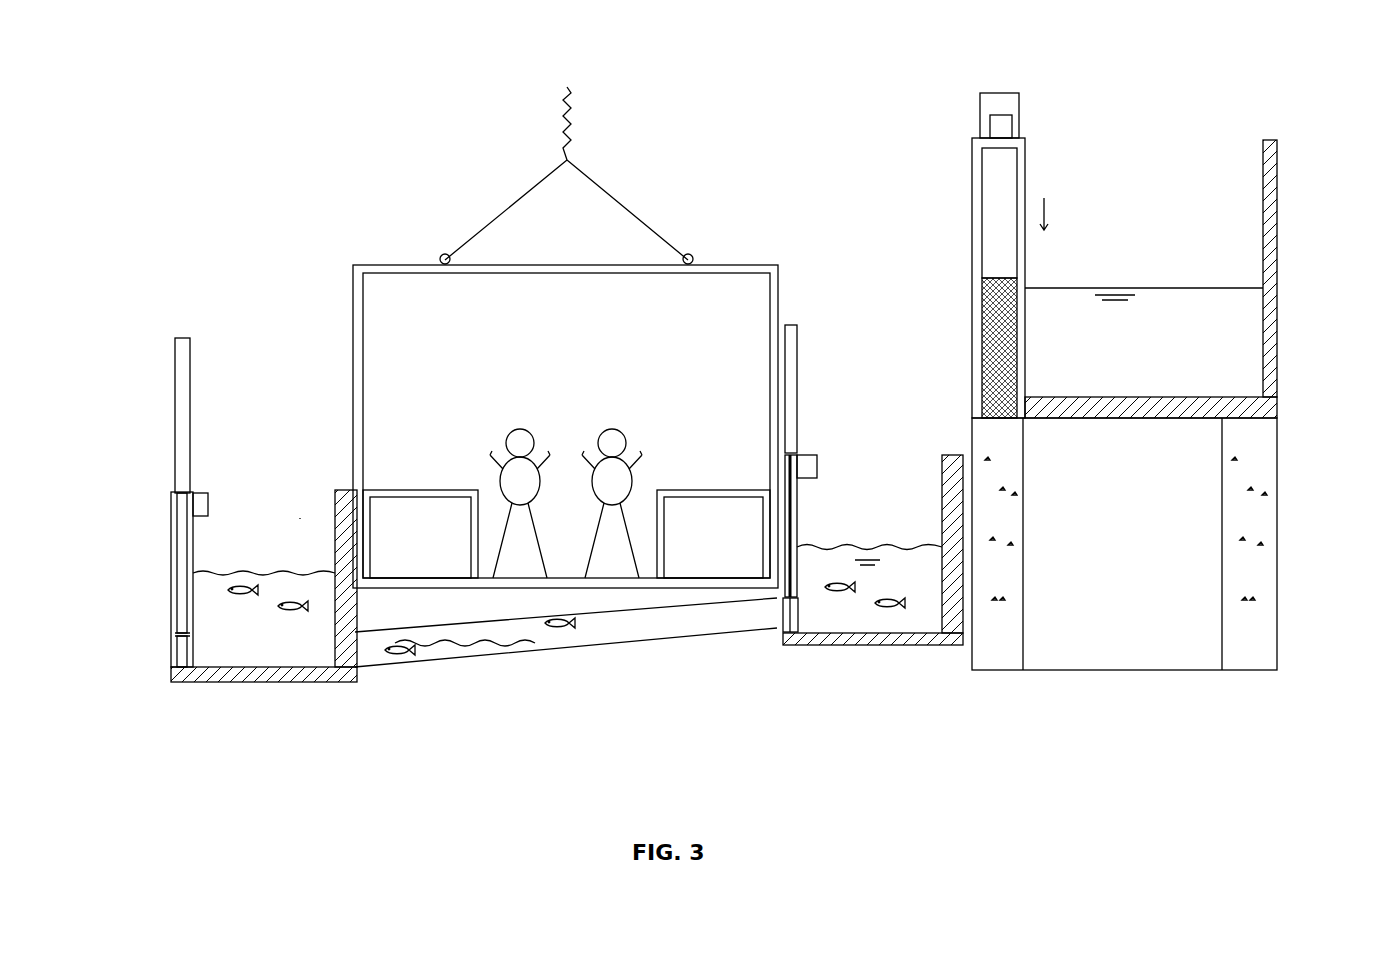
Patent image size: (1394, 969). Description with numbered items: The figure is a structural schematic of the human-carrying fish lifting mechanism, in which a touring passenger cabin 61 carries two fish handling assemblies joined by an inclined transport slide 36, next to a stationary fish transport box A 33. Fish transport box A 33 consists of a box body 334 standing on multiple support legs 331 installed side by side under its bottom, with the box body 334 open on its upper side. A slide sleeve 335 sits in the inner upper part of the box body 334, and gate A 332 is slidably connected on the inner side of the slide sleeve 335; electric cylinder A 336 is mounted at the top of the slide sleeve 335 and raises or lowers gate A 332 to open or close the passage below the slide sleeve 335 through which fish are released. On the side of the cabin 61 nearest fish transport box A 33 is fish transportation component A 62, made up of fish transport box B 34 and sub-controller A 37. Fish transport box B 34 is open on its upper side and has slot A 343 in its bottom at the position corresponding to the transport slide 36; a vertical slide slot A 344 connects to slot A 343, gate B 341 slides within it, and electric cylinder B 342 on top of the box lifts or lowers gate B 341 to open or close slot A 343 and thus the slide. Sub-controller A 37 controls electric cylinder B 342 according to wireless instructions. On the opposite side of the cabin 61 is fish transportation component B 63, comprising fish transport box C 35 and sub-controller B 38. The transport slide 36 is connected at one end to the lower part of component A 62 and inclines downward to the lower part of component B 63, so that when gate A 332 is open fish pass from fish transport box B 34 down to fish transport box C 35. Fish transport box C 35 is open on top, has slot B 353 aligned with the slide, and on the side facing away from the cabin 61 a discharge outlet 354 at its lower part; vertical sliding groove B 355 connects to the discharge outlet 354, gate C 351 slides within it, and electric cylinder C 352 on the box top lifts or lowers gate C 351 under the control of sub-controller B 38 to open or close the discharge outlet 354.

The fish transport box A 33 is at (1168, 197).
The box body 334 is at (1282, 217).
The slide sleeve 335 is at (997, 240).
The electric cylinder A 336 is at (987, 108).
The gate A 332 is at (983, 320).
The support legs 331 is at (988, 672).
The touring passenger cabin 61 is at (403, 283).
The fish transportation component A 62 is at (917, 476).
The fish transportation component B 63 is at (300, 518).
The electric cylinder C 352 is at (177, 360).
The vertical sliding groove B 355 is at (178, 565).
The discharge outlet 354 is at (172, 640).
The gate C 351 is at (180, 662).
The fish transport box C 35 is at (272, 658).
The slot B 353 is at (347, 660).
The sub-controller B 38 is at (208, 497).
The transport slide 36 is at (560, 642).
The electric cylinder B 342 is at (870, 338).
The vertical slide slot A 344 is at (876, 510).
The slot A 343 is at (782, 632).
The gate B 341 is at (785, 640).
The fish transport box B 34 is at (865, 645).
The sub-controller A 37 is at (817, 466).